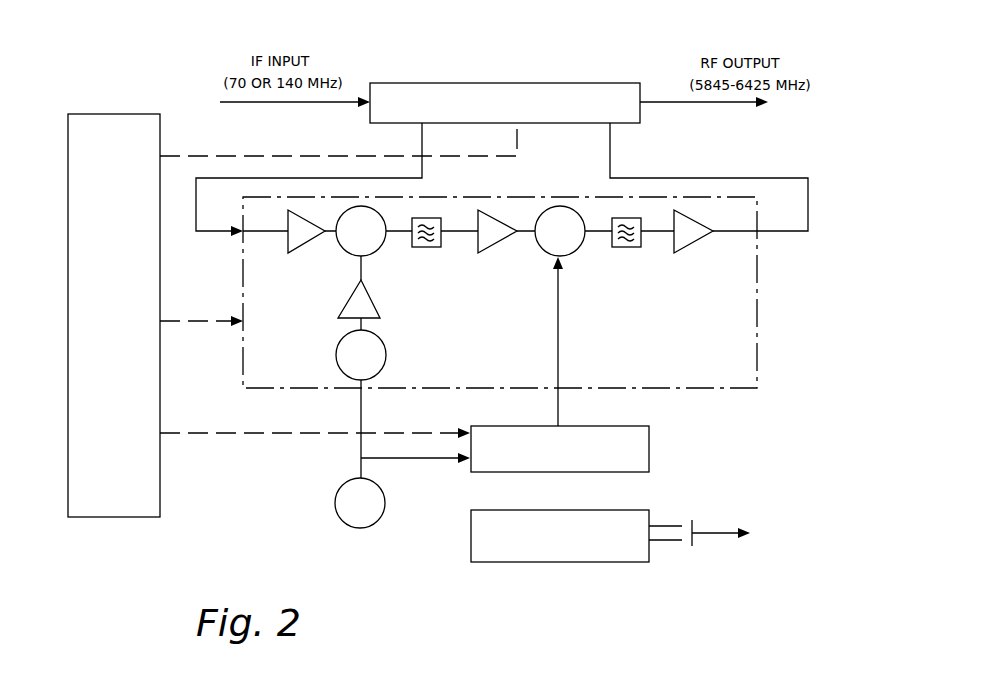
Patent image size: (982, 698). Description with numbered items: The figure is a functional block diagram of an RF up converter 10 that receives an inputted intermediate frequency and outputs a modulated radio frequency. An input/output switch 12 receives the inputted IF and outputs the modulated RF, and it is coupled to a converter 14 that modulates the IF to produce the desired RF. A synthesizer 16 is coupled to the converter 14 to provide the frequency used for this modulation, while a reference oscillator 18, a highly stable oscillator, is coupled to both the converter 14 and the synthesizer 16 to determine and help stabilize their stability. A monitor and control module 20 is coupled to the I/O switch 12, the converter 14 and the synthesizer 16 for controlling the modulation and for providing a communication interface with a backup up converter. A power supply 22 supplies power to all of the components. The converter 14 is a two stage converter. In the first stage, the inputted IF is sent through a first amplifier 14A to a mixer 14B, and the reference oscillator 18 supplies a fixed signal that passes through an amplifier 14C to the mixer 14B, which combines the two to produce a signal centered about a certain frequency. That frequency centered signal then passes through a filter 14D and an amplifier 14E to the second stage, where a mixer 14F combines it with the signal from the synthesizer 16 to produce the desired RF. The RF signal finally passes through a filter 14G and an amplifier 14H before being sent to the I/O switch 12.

The RF up converter 10 is at (762, 3).
The input/output (I/O) switch 12 is at (490, 83).
The converter 14 is at (752, 326).
The first amplifier 14A is at (318, 239).
The mixer 14B is at (372, 243).
The amplifier 14C is at (340, 308).
The filter 14D is at (478, 186).
The amplifier 14E is at (495, 240).
The mixer 14F is at (565, 216).
The filter 14G is at (632, 247).
The amplifier 14H is at (692, 241).
The synthesizer 16 is at (643, 460).
The reference oscillator 18 is at (349, 488).
The monitor and control module 20 is at (82, 344).
The power supply 22 is at (570, 552).